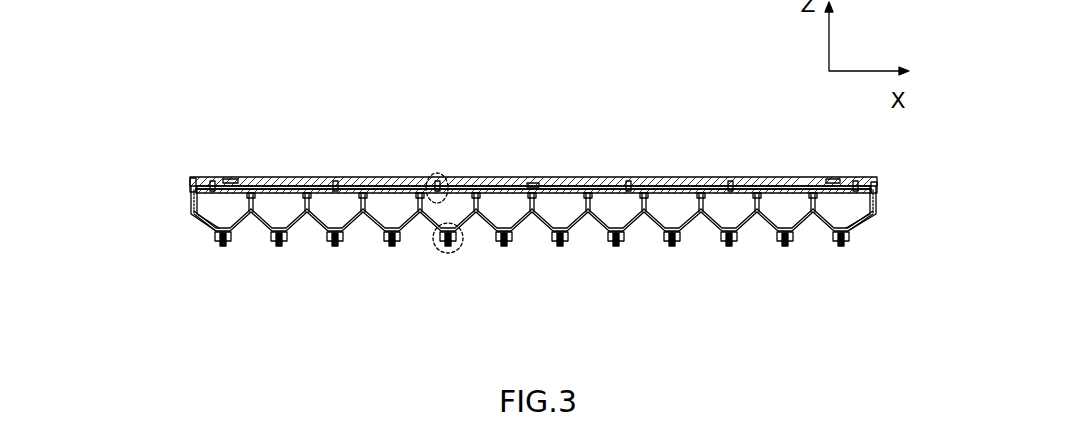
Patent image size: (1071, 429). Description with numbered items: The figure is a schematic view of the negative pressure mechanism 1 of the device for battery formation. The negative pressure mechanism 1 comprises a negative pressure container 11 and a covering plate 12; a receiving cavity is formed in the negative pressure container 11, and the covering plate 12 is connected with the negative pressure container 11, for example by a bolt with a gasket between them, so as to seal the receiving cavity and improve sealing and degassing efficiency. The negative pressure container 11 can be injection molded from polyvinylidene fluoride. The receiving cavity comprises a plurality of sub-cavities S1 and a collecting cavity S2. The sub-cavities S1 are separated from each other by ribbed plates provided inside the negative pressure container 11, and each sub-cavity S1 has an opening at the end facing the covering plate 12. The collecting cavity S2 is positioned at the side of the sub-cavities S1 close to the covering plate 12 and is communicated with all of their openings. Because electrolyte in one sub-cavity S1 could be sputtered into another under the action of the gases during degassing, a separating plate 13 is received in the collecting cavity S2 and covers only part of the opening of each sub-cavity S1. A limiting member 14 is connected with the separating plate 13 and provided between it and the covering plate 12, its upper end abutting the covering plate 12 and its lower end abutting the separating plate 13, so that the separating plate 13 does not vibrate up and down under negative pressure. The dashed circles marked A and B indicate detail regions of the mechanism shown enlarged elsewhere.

The negative pressure mechanism 1 is at (176, 114).
The negative pressure container 11 is at (192, 214).
The covering plate 12 is at (310, 177).
The separating plate 13 is at (375, 192).
The limiting member 14 is at (730, 182).
The sub-cavity S1 is at (236, 216).
The collecting cavity S2 is at (588, 190).
The enlarged region A is at (447, 175).
The enlarged region B is at (438, 253).